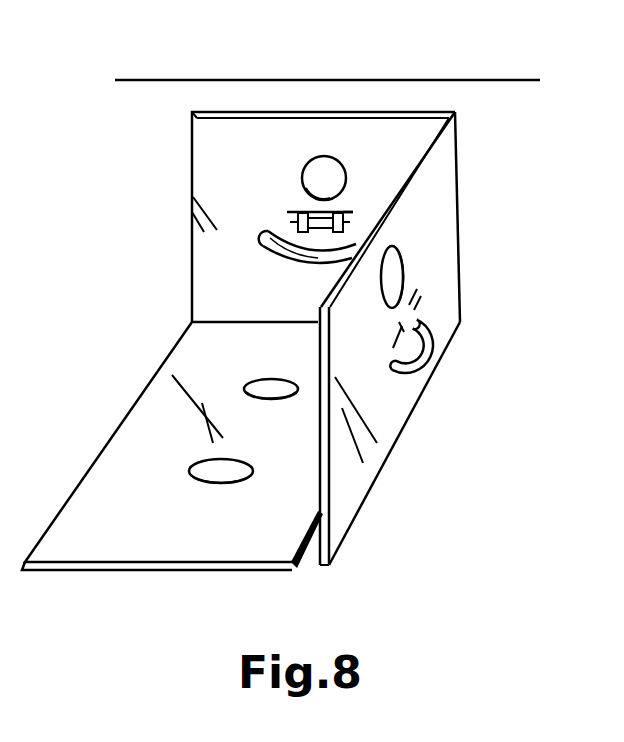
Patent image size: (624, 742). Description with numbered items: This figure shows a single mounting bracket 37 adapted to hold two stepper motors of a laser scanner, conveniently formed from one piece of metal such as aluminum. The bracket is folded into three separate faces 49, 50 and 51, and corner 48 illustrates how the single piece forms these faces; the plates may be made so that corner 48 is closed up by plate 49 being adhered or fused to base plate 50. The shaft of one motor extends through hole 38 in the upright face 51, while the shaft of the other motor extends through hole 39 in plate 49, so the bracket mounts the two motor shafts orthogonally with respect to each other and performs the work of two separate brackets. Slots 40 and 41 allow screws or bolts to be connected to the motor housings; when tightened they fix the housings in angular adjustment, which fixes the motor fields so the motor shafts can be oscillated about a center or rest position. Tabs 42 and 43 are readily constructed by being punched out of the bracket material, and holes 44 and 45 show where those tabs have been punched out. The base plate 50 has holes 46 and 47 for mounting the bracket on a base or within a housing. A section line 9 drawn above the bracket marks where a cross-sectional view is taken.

The section line 9- 9 is at (139, 112).
The bracket 37 is at (294, 365).
The hole 38 is at (317, 160).
The hole 39 is at (407, 274).
The slot 40 is at (277, 254).
The slot 41 is at (428, 350).
The tab 42 is at (300, 212).
The tab 43 is at (351, 203).
The hole 44 is at (394, 330).
The hole 45 is at (422, 297).
The hole 46 is at (272, 378).
The hole 47 is at (210, 462).
The corner 48 is at (313, 565).
The plate 49 is at (450, 214).
The base plate 50 is at (68, 553).
The face 51 is at (232, 157).